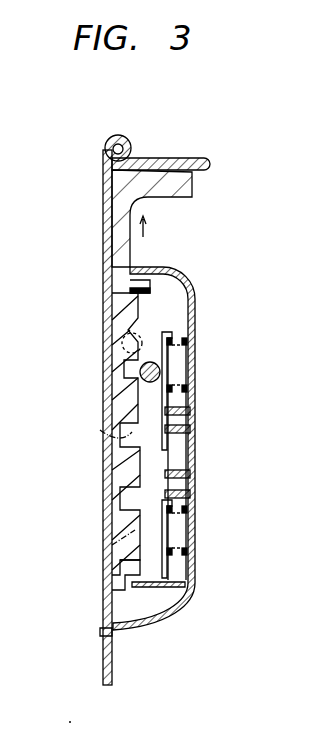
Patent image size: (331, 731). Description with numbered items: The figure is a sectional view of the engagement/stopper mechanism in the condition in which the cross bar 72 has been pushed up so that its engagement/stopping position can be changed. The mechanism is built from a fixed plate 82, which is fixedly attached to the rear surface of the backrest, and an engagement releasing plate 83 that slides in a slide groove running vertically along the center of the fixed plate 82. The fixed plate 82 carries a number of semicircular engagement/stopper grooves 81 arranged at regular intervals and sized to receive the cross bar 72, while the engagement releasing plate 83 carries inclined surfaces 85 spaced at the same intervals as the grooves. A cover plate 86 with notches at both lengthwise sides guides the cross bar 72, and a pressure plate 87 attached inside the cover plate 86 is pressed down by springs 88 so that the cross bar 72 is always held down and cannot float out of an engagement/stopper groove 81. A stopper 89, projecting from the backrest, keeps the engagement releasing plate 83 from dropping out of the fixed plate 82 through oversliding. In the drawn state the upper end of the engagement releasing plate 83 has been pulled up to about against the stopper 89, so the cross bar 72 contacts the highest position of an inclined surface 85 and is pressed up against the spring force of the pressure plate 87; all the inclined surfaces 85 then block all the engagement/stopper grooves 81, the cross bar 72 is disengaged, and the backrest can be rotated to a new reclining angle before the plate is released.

The cross bar 72 is at (124, 334).
The engagement/stopper grooves 81 is at (127, 553).
The fixed plate 82 is at (103, 207).
The engagement releasing plate 83 is at (190, 197).
The inclined surfaces 85 is at (93, 430).
The cover plate 86 is at (197, 307).
The pressure plate 87 is at (180, 443).
The springs 88 is at (183, 362).
The stopper 89 is at (180, 158).